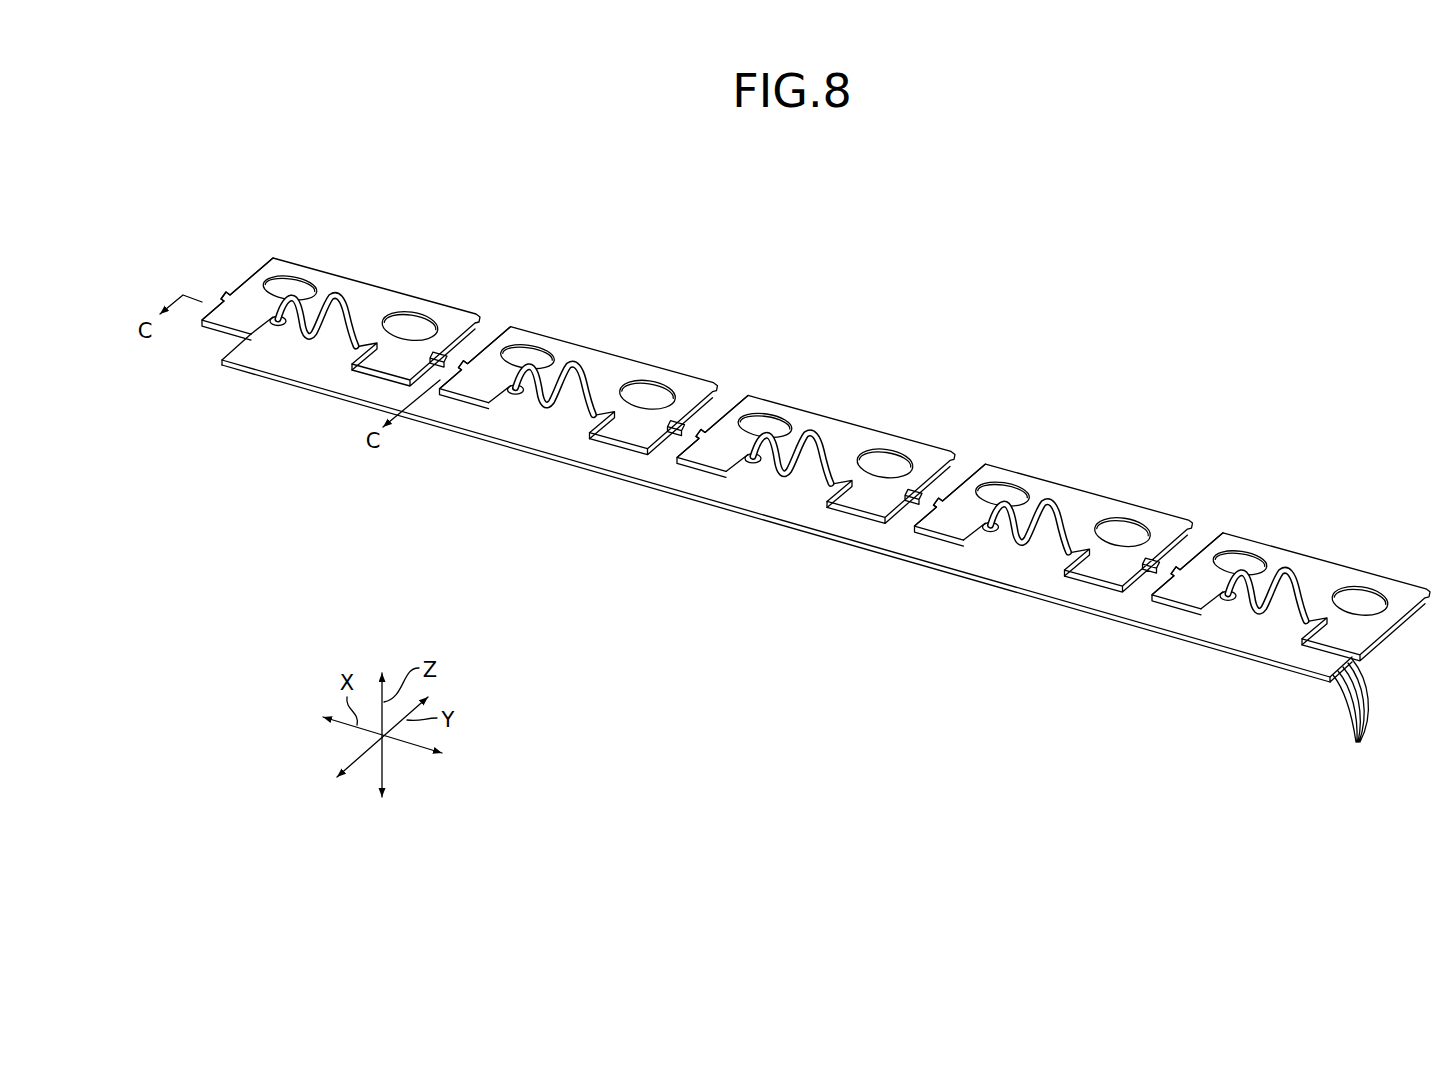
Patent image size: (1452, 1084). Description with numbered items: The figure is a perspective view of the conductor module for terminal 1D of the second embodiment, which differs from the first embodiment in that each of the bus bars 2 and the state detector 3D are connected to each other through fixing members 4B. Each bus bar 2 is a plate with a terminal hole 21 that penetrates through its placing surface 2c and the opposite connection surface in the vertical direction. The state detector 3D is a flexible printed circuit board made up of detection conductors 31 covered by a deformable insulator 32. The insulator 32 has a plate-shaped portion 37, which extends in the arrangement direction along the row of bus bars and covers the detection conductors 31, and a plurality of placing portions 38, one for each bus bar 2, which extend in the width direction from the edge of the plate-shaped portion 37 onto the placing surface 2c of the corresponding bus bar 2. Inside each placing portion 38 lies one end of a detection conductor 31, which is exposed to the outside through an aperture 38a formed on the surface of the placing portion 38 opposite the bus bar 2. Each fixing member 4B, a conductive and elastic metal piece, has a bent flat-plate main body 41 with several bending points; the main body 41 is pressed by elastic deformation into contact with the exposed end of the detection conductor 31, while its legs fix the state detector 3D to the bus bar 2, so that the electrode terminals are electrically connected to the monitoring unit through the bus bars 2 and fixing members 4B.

The conductor module for terminal 1D is at (727, 207).
The bus bar 2 is at (393, 286).
The placing surface 2c is at (257, 275).
The terminal hole 21 is at (279, 288).
The fixing member 4B is at (800, 406).
The main body 41 is at (338, 298).
The placing portion 38 is at (337, 360).
The aperture 38a is at (297, 348).
The plate-shaped portion 37 is at (787, 552).
The insulator 32 is at (1289, 677).
The state detector 3D is at (1310, 685).
The detection conductor 31 is at (1351, 716).